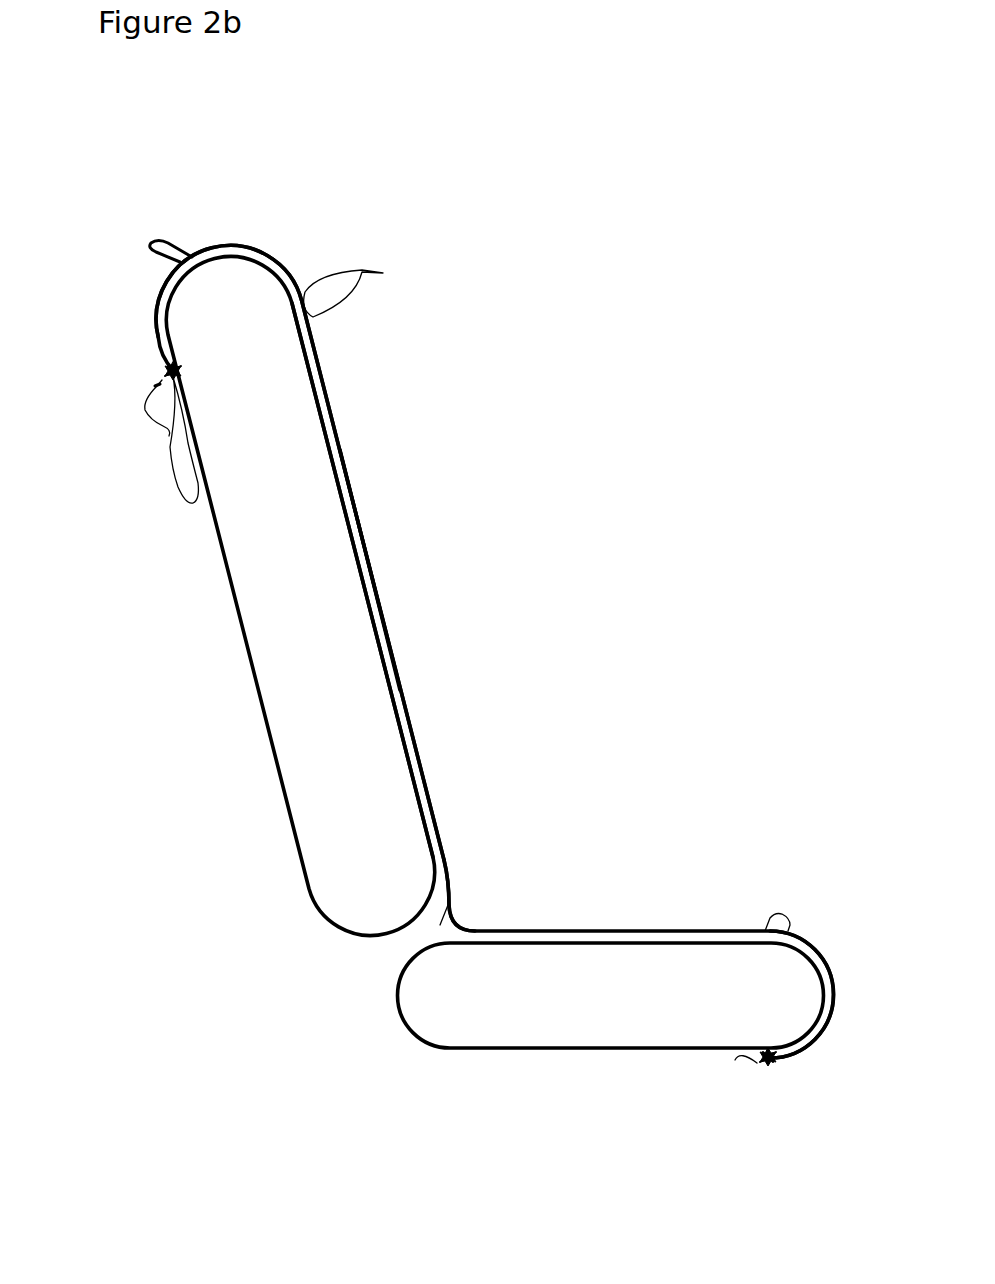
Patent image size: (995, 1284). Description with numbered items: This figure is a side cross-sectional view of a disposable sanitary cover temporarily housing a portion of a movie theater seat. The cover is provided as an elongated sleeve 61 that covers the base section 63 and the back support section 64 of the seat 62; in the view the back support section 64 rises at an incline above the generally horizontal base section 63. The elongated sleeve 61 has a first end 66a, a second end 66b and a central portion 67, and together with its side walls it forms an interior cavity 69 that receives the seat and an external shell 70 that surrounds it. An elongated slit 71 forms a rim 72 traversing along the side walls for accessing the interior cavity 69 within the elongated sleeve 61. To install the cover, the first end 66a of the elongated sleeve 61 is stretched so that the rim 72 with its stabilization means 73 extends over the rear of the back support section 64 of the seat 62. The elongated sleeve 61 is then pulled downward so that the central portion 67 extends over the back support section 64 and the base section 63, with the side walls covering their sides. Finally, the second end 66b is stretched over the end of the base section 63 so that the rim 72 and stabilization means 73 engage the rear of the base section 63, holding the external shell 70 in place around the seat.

The elongated sleeve 61 is at (410, 694).
The seat 62 is at (306, 444).
The base section 63 is at (650, 1001).
The back support section 64 is at (310, 551).
The first end 66a is at (213, 240).
The second end 66b is at (833, 980).
The central portion 67 is at (390, 610).
The interior cavity 69 is at (450, 886).
The external shell 70 is at (573, 245).
The elongated slit 71 is at (165, 333).
The rim 72 is at (167, 363).
The stabilization means 73 is at (167, 432).